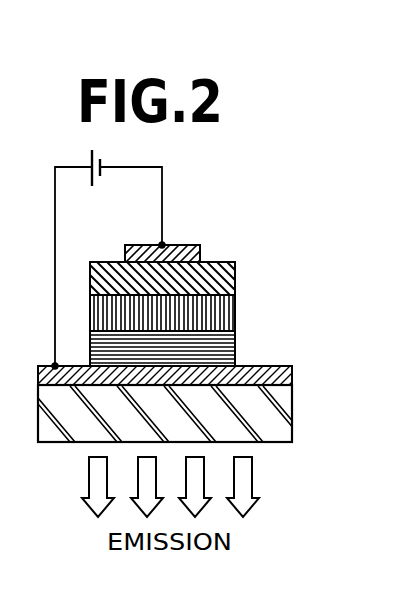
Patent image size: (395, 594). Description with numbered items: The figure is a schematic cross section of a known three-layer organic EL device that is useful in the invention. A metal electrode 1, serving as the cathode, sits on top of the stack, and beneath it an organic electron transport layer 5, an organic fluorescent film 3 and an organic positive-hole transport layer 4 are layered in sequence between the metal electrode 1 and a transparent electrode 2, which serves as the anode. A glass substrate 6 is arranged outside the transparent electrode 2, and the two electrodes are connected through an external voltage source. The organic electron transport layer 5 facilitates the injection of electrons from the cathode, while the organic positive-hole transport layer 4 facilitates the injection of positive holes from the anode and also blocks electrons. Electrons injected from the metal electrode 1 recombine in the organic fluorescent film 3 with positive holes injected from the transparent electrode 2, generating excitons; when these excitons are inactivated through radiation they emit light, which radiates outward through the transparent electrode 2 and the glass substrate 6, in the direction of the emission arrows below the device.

The metal electrode 1 is at (200, 249).
The organic electron transport layer 5 is at (235, 273).
The organic fluorescent film 3 is at (235, 308).
The organic positive-hole transport layer 4 is at (235, 347).
The transparent electrode 2 is at (292, 372).
The glass substrate 6 is at (292, 408).